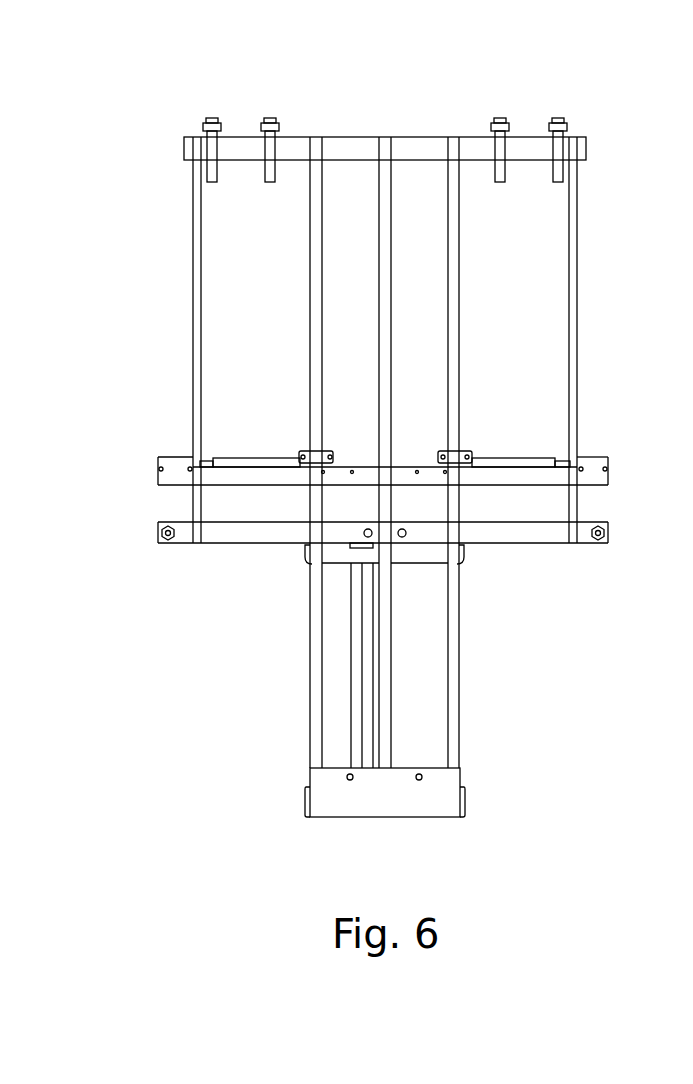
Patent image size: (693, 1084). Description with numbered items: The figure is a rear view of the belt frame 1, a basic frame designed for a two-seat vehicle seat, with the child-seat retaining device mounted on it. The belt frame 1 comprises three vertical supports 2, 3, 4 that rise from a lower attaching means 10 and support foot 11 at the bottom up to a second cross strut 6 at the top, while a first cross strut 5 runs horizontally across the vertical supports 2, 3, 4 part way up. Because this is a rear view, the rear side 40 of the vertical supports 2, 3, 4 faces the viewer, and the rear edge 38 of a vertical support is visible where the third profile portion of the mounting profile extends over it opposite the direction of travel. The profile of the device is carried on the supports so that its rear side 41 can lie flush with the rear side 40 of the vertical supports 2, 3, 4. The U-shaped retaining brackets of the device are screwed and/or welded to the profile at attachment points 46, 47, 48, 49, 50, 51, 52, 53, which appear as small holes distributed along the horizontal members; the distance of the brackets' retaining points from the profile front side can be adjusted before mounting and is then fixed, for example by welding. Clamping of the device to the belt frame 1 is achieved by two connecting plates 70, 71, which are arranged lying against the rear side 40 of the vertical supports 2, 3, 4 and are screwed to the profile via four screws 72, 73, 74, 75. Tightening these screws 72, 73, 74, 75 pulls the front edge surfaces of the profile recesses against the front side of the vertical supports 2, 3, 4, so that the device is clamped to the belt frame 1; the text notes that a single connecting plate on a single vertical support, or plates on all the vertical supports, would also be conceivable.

The belt frame 1 is at (298, 819).
The vertical support 2 is at (453, 730).
The vertical support 3 is at (385, 672).
The vertical support 4 is at (317, 722).
The first cross strut 5 is at (543, 533).
The second cross strut 6 is at (532, 142).
The attaching means 10 is at (358, 812).
The support foot 11 is at (353, 677).
The rear edge 38 is at (310, 340).
The rear side 40 is at (380, 456).
The rear side 41 is at (530, 455).
The attachment point 46 is at (605, 469).
The attachment point 47 is at (581, 470).
The attachment point 48 is at (445, 473).
The attachment point 49 is at (417, 473).
The attachment point 50 is at (352, 473).
The attachment point 51 is at (323, 473).
The attachment point 52 is at (190, 470).
The attachment point 53 is at (160, 470).
The connecting plate 70 is at (463, 411).
The connecting plate 71 is at (270, 471).
The screw 72 is at (303, 458).
The screw 73 is at (330, 456).
The screw 74 is at (440, 455).
The screw 75 is at (468, 452).